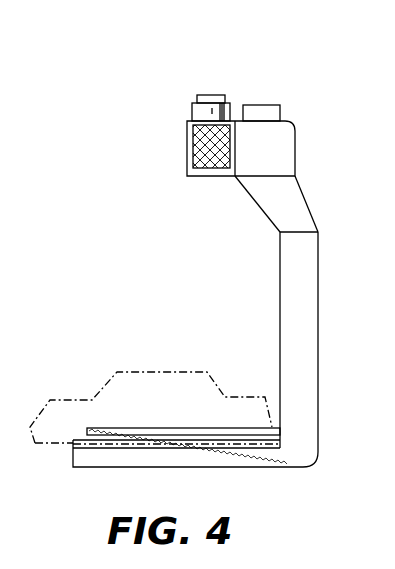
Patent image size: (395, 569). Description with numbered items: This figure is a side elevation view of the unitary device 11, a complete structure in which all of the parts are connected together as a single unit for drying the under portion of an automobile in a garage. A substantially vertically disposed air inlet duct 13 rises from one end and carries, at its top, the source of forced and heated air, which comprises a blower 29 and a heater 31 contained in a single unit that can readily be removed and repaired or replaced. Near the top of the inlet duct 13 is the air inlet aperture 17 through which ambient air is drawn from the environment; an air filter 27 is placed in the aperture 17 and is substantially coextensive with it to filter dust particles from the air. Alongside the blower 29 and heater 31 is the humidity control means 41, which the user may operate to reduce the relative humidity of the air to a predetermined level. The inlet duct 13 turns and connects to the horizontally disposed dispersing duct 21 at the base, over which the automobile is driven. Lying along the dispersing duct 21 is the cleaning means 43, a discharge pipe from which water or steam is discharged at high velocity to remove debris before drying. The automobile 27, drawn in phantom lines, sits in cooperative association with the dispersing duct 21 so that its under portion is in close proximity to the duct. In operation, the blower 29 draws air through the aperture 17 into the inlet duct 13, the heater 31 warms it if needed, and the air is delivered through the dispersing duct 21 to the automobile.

The unitary device 11 is at (324, 367).
The air inlet duct 13 is at (307, 302).
The air inlet aperture 17 is at (193, 143).
The dispersing duct 21 is at (130, 440).
The air filter 27 is at (215, 155).
The blower 29 is at (206, 95).
The heater 31 is at (206, 95).
The humidity control means 41 is at (270, 105).
The cleaning means 43 is at (195, 428).